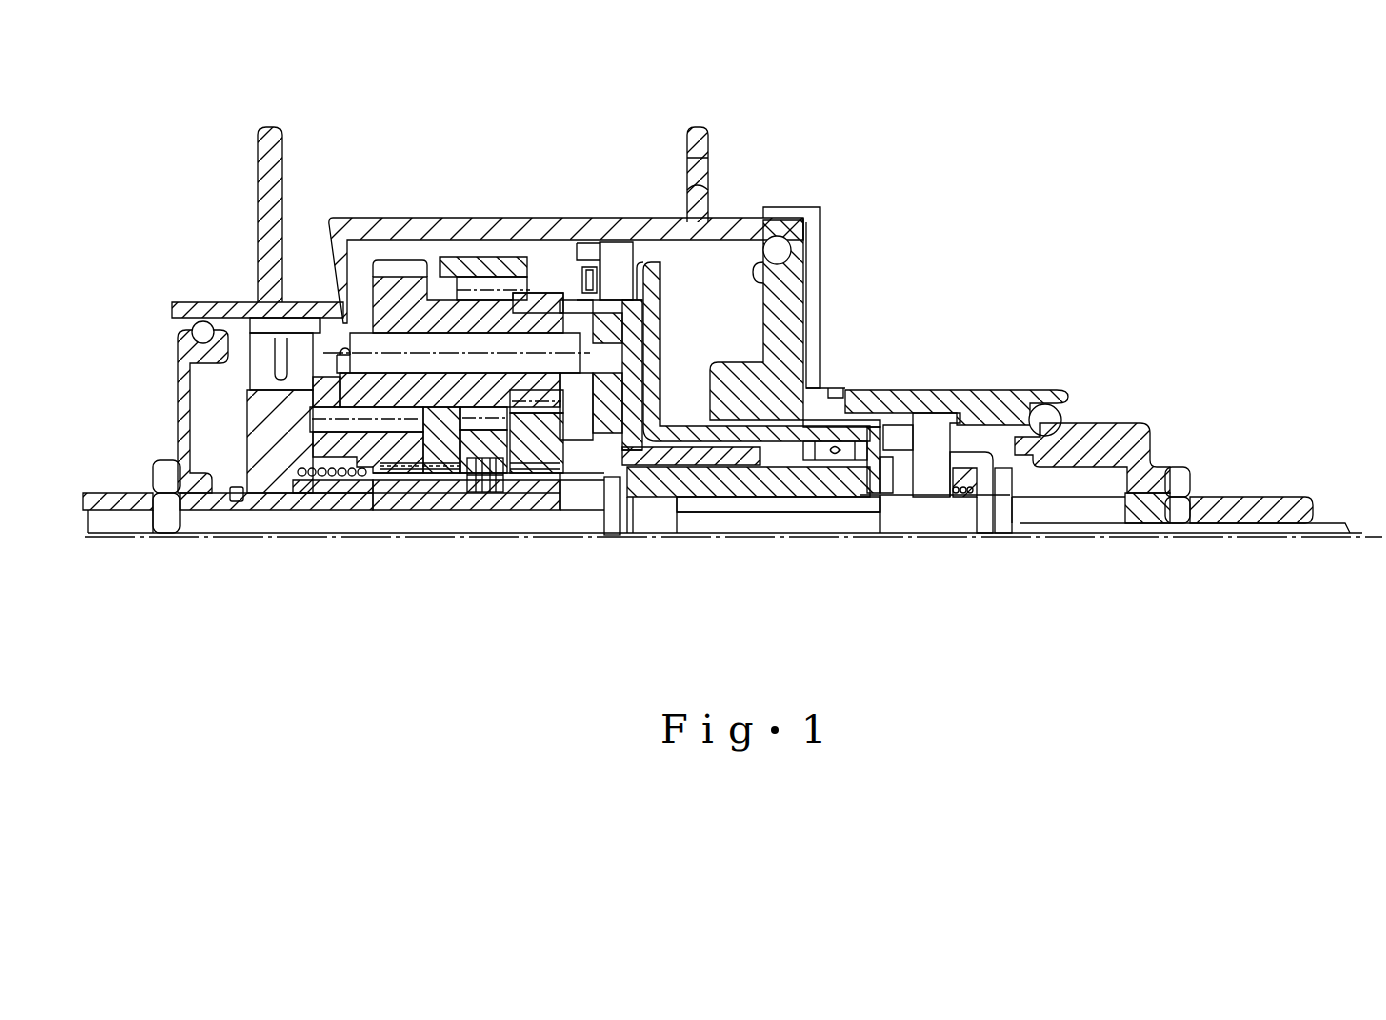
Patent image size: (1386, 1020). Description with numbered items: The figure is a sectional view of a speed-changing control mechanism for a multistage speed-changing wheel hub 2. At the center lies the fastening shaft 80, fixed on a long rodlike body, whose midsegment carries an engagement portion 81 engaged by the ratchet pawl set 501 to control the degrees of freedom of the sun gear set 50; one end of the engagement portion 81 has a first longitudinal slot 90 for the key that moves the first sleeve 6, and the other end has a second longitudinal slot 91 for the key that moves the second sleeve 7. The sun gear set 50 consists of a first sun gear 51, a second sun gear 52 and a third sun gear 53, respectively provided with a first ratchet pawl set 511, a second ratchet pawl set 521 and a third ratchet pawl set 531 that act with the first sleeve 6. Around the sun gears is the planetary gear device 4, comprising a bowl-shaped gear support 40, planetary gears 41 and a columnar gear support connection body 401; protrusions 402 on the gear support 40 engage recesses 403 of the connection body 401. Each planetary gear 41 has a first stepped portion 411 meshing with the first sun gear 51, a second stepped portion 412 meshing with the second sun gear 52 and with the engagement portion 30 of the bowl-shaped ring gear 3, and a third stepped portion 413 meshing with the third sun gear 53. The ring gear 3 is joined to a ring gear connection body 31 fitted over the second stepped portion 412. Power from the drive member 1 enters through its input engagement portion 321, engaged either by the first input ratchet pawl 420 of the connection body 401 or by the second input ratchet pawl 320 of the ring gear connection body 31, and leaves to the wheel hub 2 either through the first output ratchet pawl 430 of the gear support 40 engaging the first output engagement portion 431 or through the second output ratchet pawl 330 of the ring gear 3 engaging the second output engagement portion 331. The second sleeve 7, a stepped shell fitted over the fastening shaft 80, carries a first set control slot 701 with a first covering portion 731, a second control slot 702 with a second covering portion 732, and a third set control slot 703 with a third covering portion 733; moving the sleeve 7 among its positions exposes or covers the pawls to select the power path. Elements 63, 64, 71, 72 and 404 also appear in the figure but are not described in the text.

The drive member 1 is at (913, 400).
The wheel hub 2 is at (660, 230).
The ring gear 3 is at (570, 270).
The planetary gear device 4 is at (367, 282).
The first sleeve 6 is at (352, 488).
The second sleeve 7 is at (992, 495).
The engagement portion 30 is at (500, 263).
The ring gear connection body 31 is at (747, 455).
The gear support 40 is at (240, 500).
The planetary gears 41 is at (353, 317).
The sun gear set 50 is at (578, 450).
The first sun gear 51 is at (330, 480).
The second sun gear 52 is at (400, 505).
The third sun gear 53 is at (528, 475).
The outer housing wall 63 is at (282, 490).
The spacer bar 64 is at (606, 500).
The seat ring 71 is at (968, 493).
The spacer 72 is at (1002, 533).
The fastening shaft 80 is at (440, 497).
The engagement portion 81 is at (480, 492).
The first longitudinal slot 90 is at (665, 510).
The second longitudinal slot 91 is at (1113, 513).
The second input ratchet pawl 320 is at (813, 437).
The input engagement portion 321 is at (873, 423).
The second output ratchet pawl 330 is at (615, 255).
The second output engagement portion 331 is at (600, 265).
The gear support connection body 401 is at (833, 483).
The protrusions 402 is at (576, 500).
The recesses 403 is at (630, 497).
The edge 404 is at (545, 500).
The first stepped portion 411 is at (395, 267).
The second stepped portion 412 is at (470, 265).
The third stepped portion 413 is at (530, 270).
The first input ratchet pawl 420 is at (935, 432).
The first output ratchet pawl 430 is at (262, 331).
The first output engagement portion 431 is at (262, 332).
The ratchet pawl set 501 is at (350, 500).
The first ratchet pawl set 511 is at (402, 495).
The second ratchet pawl set 521 is at (450, 490).
The third ratchet pawl set 531 is at (488, 492).
The first set control slot 701 is at (555, 265).
The second control slot 702 is at (717, 430).
The third set control slot 703 is at (935, 403).
The first covering portion 731 is at (447, 243).
The second covering portion 732 is at (838, 437).
The third covering portion 733 is at (885, 493).